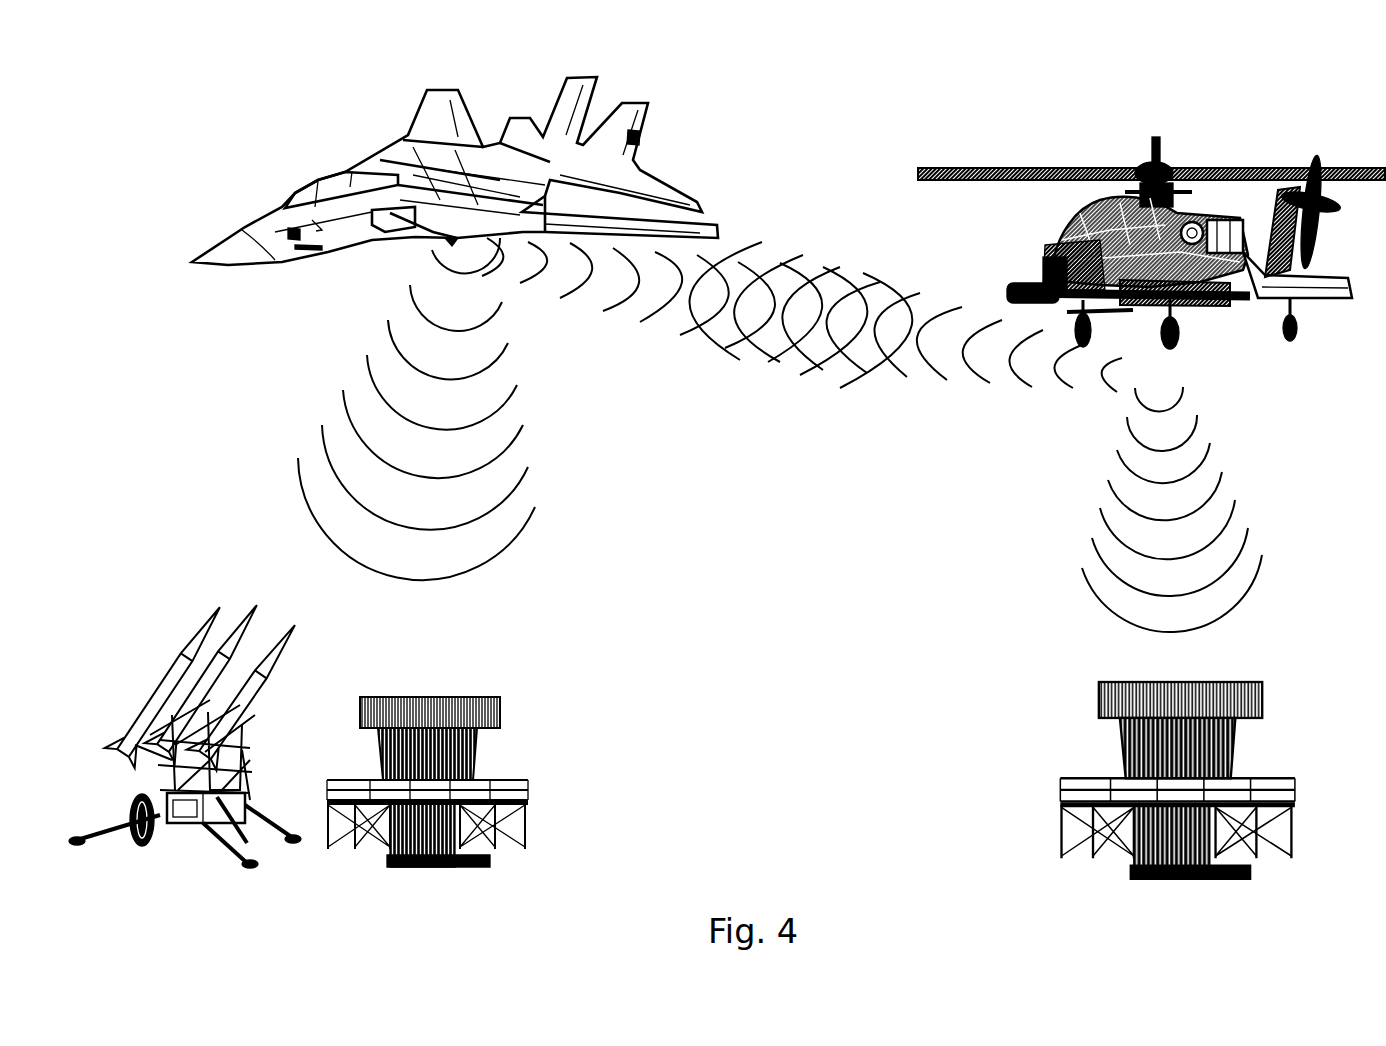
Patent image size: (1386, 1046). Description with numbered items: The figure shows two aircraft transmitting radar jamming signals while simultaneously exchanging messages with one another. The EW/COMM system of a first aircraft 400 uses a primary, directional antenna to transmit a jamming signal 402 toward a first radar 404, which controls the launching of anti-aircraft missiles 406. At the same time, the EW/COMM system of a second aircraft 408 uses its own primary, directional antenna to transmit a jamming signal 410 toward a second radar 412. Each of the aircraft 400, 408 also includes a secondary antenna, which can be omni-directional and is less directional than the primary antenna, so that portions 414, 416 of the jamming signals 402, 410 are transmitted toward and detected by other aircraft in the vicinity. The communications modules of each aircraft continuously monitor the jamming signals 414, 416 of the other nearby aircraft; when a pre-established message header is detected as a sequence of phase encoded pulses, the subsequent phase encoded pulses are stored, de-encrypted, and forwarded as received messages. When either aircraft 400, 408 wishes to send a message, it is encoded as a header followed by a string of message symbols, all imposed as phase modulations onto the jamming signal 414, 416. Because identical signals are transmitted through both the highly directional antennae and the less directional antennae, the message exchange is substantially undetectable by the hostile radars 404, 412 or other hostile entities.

The first aircraft 400 is at (678, 108).
The jamming signal 402 is at (528, 467).
The first radar 404 is at (498, 682).
The anti-aircraft missiles 406 is at (170, 628).
The second aircraft 408 is at (1202, 132).
The jamming signal 410 is at (1222, 472).
The second radar 412 is at (1043, 682).
The portion of jamming signal 414 is at (601, 310).
The portion of jamming signal 416 is at (975, 378).